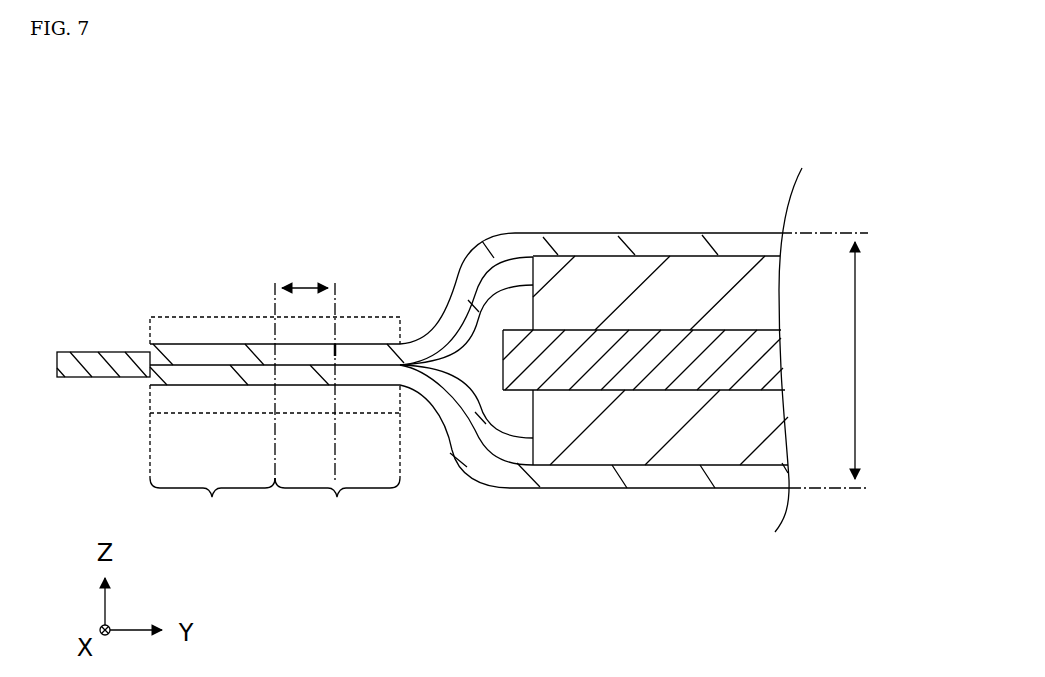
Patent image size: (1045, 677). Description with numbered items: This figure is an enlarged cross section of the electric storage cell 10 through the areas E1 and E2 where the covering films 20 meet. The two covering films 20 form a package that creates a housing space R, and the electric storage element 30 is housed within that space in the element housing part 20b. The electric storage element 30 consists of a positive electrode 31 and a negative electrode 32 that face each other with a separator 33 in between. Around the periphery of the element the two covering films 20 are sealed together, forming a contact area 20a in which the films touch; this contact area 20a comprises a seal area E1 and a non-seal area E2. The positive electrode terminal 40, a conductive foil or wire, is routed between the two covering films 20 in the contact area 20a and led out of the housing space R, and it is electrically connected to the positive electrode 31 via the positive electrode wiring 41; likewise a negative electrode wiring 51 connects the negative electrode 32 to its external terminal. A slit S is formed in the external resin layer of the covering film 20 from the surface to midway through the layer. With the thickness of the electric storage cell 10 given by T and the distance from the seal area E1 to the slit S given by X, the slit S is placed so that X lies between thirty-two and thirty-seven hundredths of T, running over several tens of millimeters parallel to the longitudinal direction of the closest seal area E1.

The electric storage cell 10 is at (800, 129).
The covering film 20 is at (446, 318).
The contact area 20a is at (208, 317).
The element housing part 20b is at (183, 368).
The electric storage element 30 is at (743, 158).
The positive electrode 31 is at (556, 298).
The negative electrode 32 is at (715, 363).
The separator 33 is at (641, 420).
The positive electrode terminal 40 is at (103, 352).
The positive electrode wiring 41 is at (452, 300).
The negative electrode wiring 51 is at (484, 472).
The slit S is at (337, 349).
The housing space R is at (513, 453).
The thickness of the electric storage cell T is at (870, 360).
The distance from the seal area to the slit X is at (303, 283).
The seal area E1 is at (212, 506).
The non-seal area E2 is at (337, 506).